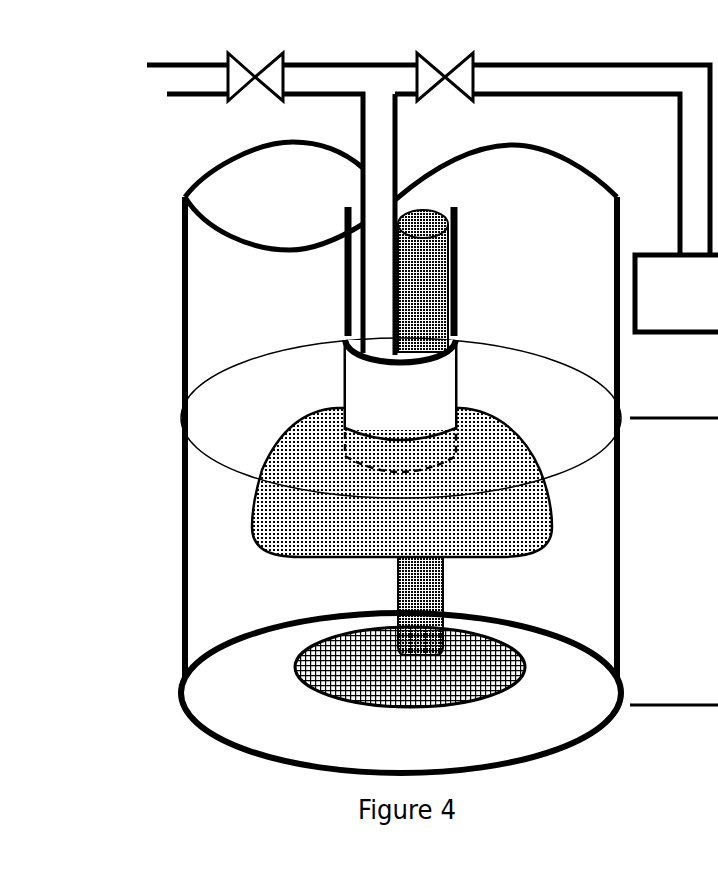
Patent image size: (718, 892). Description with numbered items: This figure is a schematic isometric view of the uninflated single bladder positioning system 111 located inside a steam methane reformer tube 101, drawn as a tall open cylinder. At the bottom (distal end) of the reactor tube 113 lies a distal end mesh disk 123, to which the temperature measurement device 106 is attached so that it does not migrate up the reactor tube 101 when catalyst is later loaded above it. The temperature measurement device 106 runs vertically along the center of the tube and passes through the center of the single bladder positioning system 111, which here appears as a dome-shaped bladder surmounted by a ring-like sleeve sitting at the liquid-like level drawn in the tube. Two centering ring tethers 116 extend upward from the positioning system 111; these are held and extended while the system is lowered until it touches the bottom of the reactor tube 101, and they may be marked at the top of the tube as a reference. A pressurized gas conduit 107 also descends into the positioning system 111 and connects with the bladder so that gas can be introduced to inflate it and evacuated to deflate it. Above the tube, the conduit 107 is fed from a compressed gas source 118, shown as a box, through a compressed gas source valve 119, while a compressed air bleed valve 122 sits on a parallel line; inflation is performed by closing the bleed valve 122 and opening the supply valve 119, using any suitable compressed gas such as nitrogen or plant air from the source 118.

The steam methane reformer tube 101 is at (180, 328).
The temperature measurement device 106 is at (422, 283).
The pressurized gas conduit 107 is at (591, 160).
The single bladder positioning system 111 is at (317, 403).
The bottom (distal end) of the reactor tube 113 is at (268, 765).
The centering ring tether 116 is at (392, 257).
The compressed gas source 118 is at (676, 293).
The compressed gas source valve 119 is at (378, 204).
The compressed air bleed valve 122 is at (255, 203).
The distal end mesh disk 123 is at (467, 683).